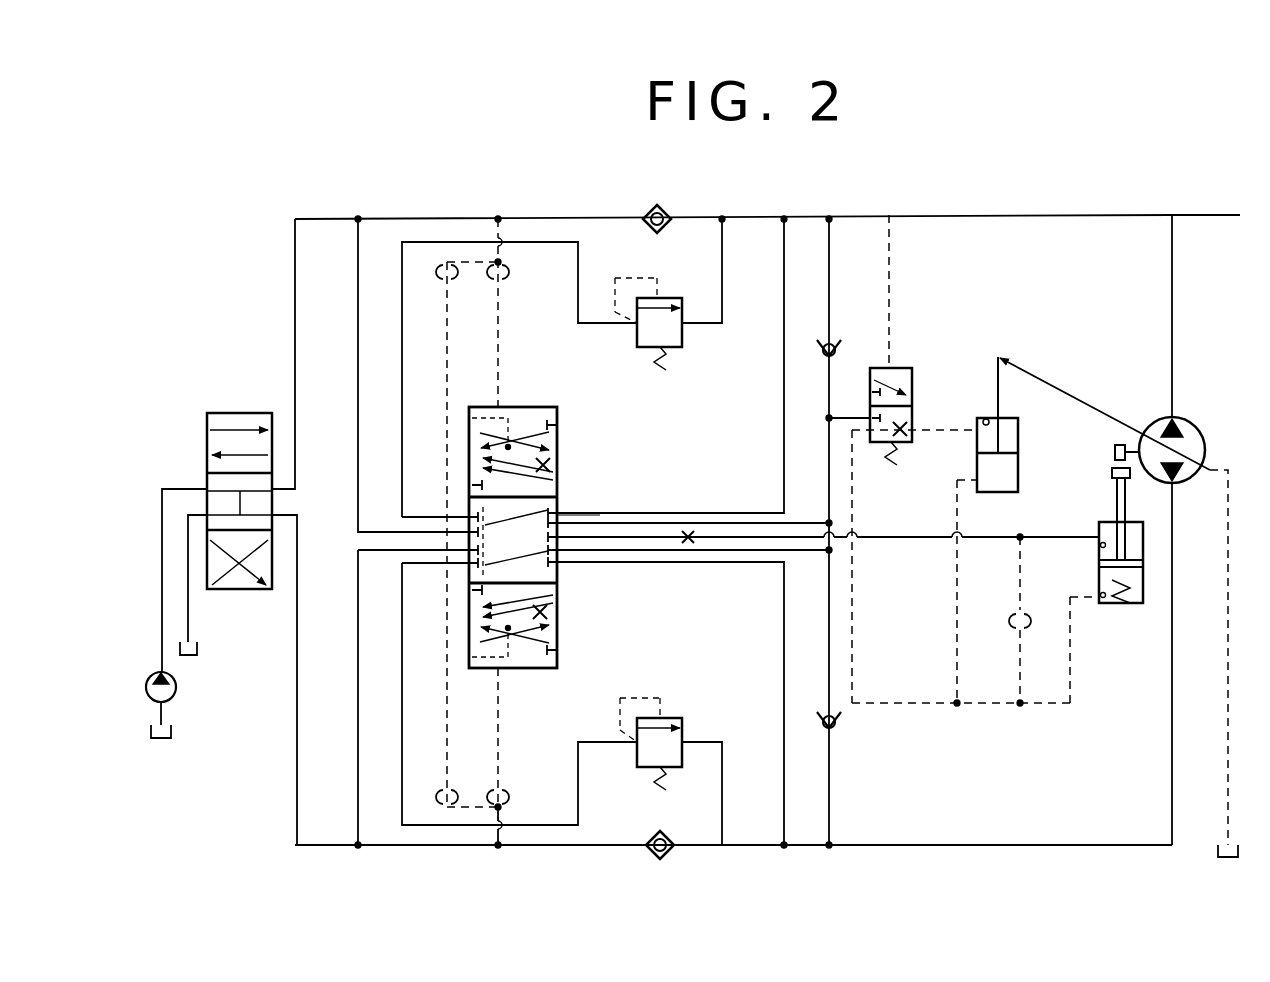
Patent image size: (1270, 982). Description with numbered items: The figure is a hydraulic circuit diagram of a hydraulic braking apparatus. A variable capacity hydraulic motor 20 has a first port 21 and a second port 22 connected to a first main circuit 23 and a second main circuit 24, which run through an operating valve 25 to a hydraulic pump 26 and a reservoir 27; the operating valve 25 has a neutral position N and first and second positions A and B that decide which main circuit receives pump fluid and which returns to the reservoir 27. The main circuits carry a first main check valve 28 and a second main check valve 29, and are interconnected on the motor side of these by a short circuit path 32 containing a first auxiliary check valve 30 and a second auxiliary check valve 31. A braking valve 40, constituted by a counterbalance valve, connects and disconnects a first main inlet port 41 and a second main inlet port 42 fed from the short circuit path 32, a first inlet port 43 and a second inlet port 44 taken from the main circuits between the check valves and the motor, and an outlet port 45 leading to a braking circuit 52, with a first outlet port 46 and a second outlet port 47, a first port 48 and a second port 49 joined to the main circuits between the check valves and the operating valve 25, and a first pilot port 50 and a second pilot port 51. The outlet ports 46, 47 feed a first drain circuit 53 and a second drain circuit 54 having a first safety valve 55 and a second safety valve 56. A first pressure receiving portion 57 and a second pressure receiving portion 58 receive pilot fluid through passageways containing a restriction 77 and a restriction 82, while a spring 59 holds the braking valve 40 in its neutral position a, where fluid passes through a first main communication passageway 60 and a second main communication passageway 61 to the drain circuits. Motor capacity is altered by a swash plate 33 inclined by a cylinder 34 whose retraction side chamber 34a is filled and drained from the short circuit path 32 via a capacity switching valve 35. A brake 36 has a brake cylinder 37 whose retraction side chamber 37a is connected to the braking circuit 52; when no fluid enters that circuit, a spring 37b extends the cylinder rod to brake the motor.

The hydraulic motor 20 is at (1195, 445).
The first port 21 is at (1180, 418).
The second port 22 is at (1176, 490).
The first main circuit 23 is at (965, 217).
The second main circuit 24 is at (918, 843).
The operating valve 25 is at (210, 412).
The hydraulic pump 26 is at (170, 698).
The reservoir 27 is at (195, 658).
The first main check valve 28 is at (647, 228).
The second main check valve 29 is at (656, 838).
The first auxiliary check valve 30 is at (835, 344).
The second auxiliary check valve 31 is at (836, 728).
The short circuit path 32 is at (826, 490).
The swash plate 33 is at (1105, 410).
The cylinder 34 is at (976, 470).
The retraction side chamber 34a is at (986, 420).
The capacity switching valve 35 is at (912, 375).
The brake 36 is at (1098, 494).
The brake cylinder 37 is at (1135, 605).
The retraction side chamber 37a is at (1102, 547).
The spring 37b is at (1105, 605).
The braking valve 40 is at (560, 410).
The first main inlet port 41 is at (565, 522).
The second main inlet port 42 is at (570, 553).
The first inlet port 43 is at (585, 500).
The second inlet port 44 is at (565, 560).
The outlet port 45 is at (580, 534).
The first outlet port 46 is at (468, 517).
The second outlet port 47 is at (468, 563).
The first port 48 is at (468, 532).
The second port 49 is at (468, 550).
The first pilot port 50 is at (480, 497).
The second pilot port 51 is at (480, 583).
The braking circuit 52 is at (738, 540).
The first drain circuit 53 is at (402, 305).
The second drain circuit 54 is at (402, 800).
The first safety valve 55 is at (672, 298).
The second safety valve 56 is at (672, 770).
The first pressure receiving portion 57 is at (496, 405).
The second pressure receiving portion 58 is at (500, 672).
The spring 59 is at (540, 405).
The first main communication passageway 60 is at (548, 470).
The second main communication passageway 61 is at (548, 592).
The restriction 77 is at (503, 265).
The restriction 82 is at (505, 800).